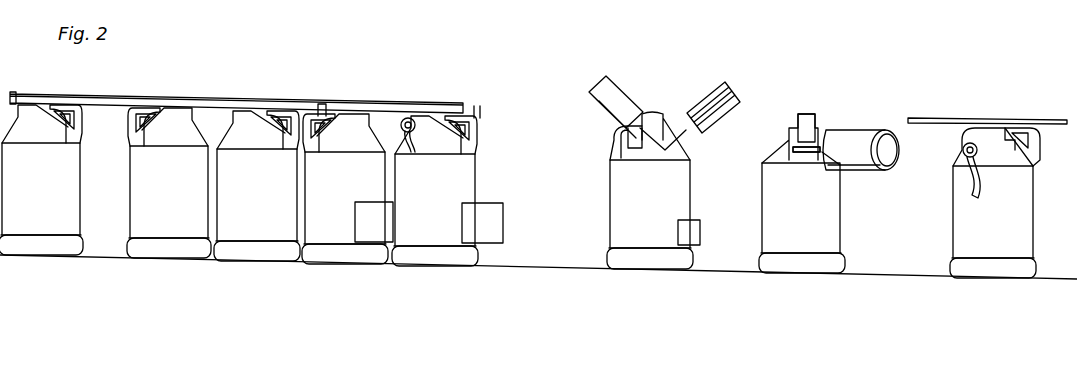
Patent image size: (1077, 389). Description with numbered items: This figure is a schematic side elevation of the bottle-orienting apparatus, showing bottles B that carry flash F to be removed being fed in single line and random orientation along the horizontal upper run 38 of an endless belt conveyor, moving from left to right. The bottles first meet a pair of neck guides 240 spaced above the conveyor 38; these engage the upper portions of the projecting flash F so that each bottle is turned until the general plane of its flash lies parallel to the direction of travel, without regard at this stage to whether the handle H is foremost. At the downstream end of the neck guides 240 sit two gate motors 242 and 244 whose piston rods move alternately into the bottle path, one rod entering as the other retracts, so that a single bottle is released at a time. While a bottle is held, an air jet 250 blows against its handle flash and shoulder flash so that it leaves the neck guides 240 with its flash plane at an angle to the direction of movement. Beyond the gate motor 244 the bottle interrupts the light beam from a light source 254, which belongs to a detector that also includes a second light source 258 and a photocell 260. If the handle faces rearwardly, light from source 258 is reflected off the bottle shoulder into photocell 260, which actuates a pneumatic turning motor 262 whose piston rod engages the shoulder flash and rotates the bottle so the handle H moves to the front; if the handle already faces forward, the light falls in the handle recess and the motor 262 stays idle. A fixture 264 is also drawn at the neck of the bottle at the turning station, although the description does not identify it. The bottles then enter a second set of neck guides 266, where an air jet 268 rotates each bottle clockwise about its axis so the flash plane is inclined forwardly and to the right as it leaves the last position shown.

The horizontal upper run of endless belt conveyor 38 is at (583, 267).
The neck guides 240 is at (110, 99).
The gate motor 242 is at (363, 215).
The gate motor 244 is at (492, 228).
The air jet 250 is at (385, 125).
The light source 254 is at (690, 232).
The second light source 258 is at (718, 108).
The photocell 260 is at (617, 105).
The pneumatic turning motor 262 is at (862, 170).
The fixture 264 is at (813, 152).
The second set of neck guides 266 is at (967, 118).
The air jet 268 is at (962, 148).
The bottle B is at (171, 187).
The flash F is at (128, 131).
The handle H is at (323, 113).